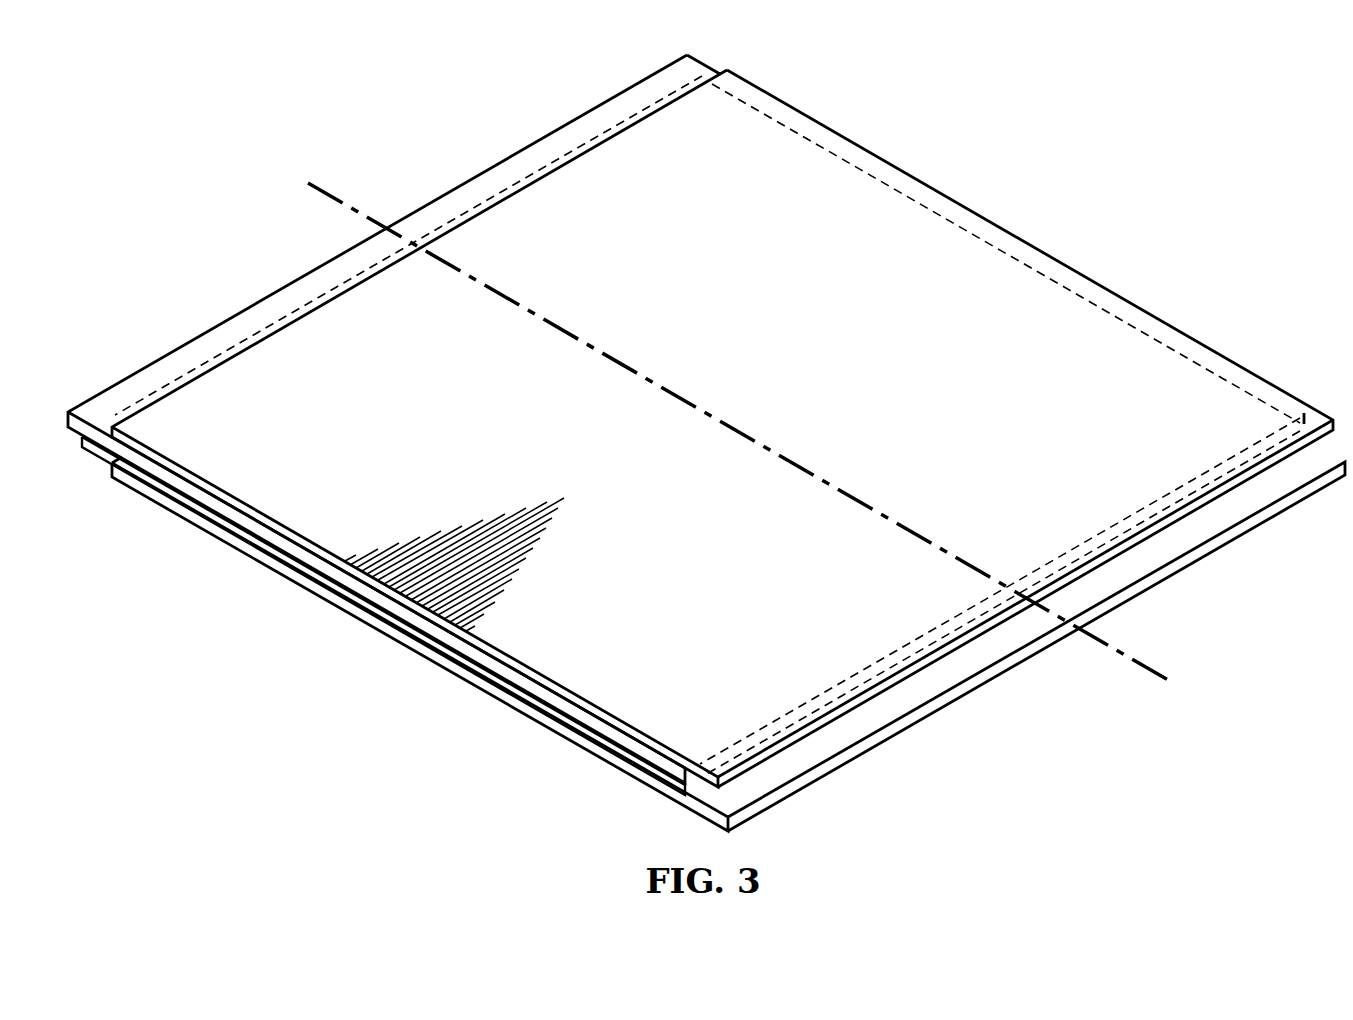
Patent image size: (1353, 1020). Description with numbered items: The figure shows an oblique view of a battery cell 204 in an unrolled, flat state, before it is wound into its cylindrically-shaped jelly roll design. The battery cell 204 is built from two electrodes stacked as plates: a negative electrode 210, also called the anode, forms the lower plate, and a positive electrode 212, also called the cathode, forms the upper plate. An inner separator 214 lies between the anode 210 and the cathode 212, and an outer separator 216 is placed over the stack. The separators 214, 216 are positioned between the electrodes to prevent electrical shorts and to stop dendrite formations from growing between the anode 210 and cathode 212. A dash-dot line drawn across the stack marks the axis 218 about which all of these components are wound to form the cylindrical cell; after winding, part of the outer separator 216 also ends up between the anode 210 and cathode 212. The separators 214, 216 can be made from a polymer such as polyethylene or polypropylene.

The battery cell 204 is at (1078, 122).
The negative electrode 210 is at (1018, 663).
The positive electrode 212 is at (480, 172).
The inner separator 214 is at (93, 455).
The outer separator 216 is at (1040, 246).
The axis 218 is at (775, 449).